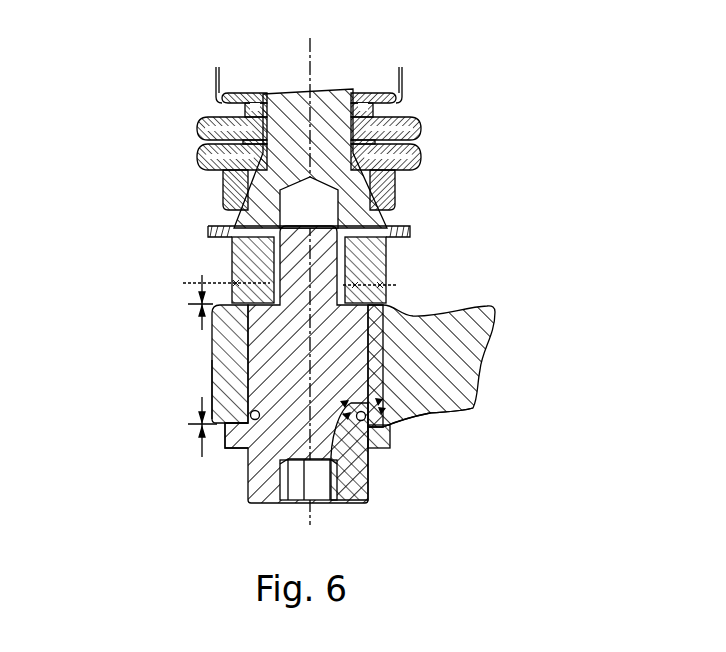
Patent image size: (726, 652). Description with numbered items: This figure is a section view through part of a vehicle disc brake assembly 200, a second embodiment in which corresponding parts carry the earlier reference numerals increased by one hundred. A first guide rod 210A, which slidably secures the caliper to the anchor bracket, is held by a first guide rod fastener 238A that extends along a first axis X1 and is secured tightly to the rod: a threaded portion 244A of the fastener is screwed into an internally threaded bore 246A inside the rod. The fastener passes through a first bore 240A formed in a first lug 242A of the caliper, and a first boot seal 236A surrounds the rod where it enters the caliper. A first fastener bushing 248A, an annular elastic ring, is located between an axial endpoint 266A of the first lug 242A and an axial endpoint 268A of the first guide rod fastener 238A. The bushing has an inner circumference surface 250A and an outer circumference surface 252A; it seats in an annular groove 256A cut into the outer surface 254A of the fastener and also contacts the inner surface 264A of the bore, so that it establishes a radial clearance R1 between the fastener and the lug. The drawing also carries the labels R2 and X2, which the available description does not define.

The vehicle disc brake assembly 200 is at (180, 116).
The first guide rod 210A is at (350, 90).
The first boot seal 236A is at (422, 122).
The internally threaded bore 246A is at (247, 227).
The threaded portion 244A is at (376, 249).
The first guide rod fastener 238A is at (258, 503).
The inner circumference surface 250A is at (360, 503).
The axial endpoint of the first guide rod fastener 268A is at (370, 487).
The annular groove 256A is at (368, 448).
The outer surface of the first fastener 254A is at (250, 455).
The first bore 240A is at (212, 348).
The first lug 242A is at (212, 388).
The inner surface of the first bore 264A is at (392, 344).
The first fastener bushing 248A is at (388, 376).
The outer circumference surface 252A is at (368, 417).
The axial endpoint of the first lug 266A is at (392, 432).
The radial clearance R1 is at (222, 280).
The radius R2 is at (390, 287).
The first axis X1 is at (310, 57).
The dimension X2 is at (200, 440).